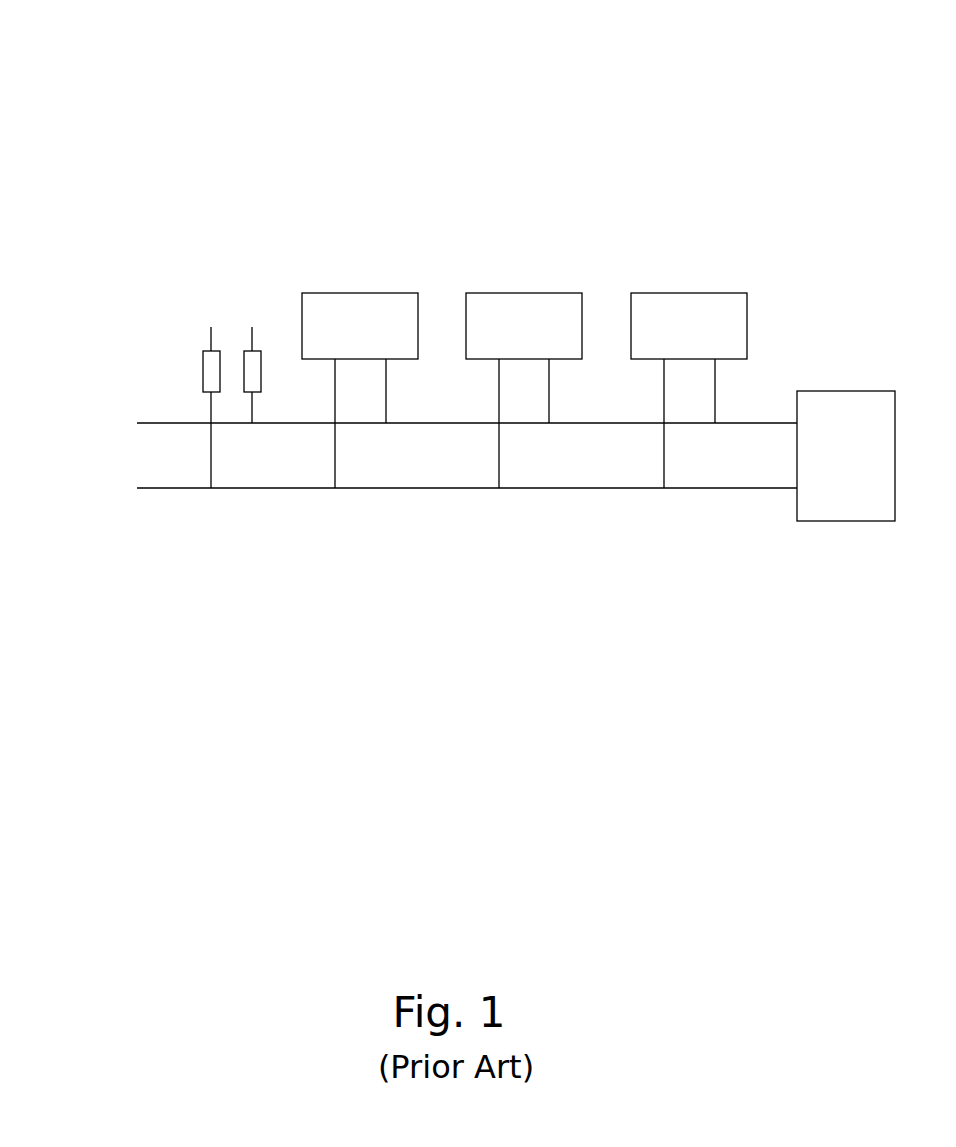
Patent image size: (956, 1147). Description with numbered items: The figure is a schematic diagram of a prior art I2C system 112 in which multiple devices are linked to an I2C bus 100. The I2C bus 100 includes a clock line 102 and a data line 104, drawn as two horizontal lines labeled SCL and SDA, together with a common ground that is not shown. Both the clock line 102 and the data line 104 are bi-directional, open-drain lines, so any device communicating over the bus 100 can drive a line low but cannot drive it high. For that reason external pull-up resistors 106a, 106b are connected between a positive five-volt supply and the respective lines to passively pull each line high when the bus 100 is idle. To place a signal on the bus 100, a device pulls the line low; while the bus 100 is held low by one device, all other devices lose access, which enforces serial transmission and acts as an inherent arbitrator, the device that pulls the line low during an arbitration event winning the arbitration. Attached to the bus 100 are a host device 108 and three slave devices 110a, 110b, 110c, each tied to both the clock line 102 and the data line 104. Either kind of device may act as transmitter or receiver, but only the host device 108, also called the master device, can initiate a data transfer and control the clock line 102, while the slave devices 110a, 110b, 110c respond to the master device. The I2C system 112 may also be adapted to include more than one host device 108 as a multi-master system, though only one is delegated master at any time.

The I2C bus 100 is at (70, 412).
The clock line 102 is at (742, 423).
The data line 104 is at (733, 488).
The pull-up resistor 106a is at (203, 368).
The pull-up resistor 106b is at (261, 378).
The host device 108 is at (829, 506).
The slave device 110a is at (384, 351).
The slave device 110b is at (548, 351).
The slave device 110c is at (666, 351).
The I2C system 112 is at (222, 82).